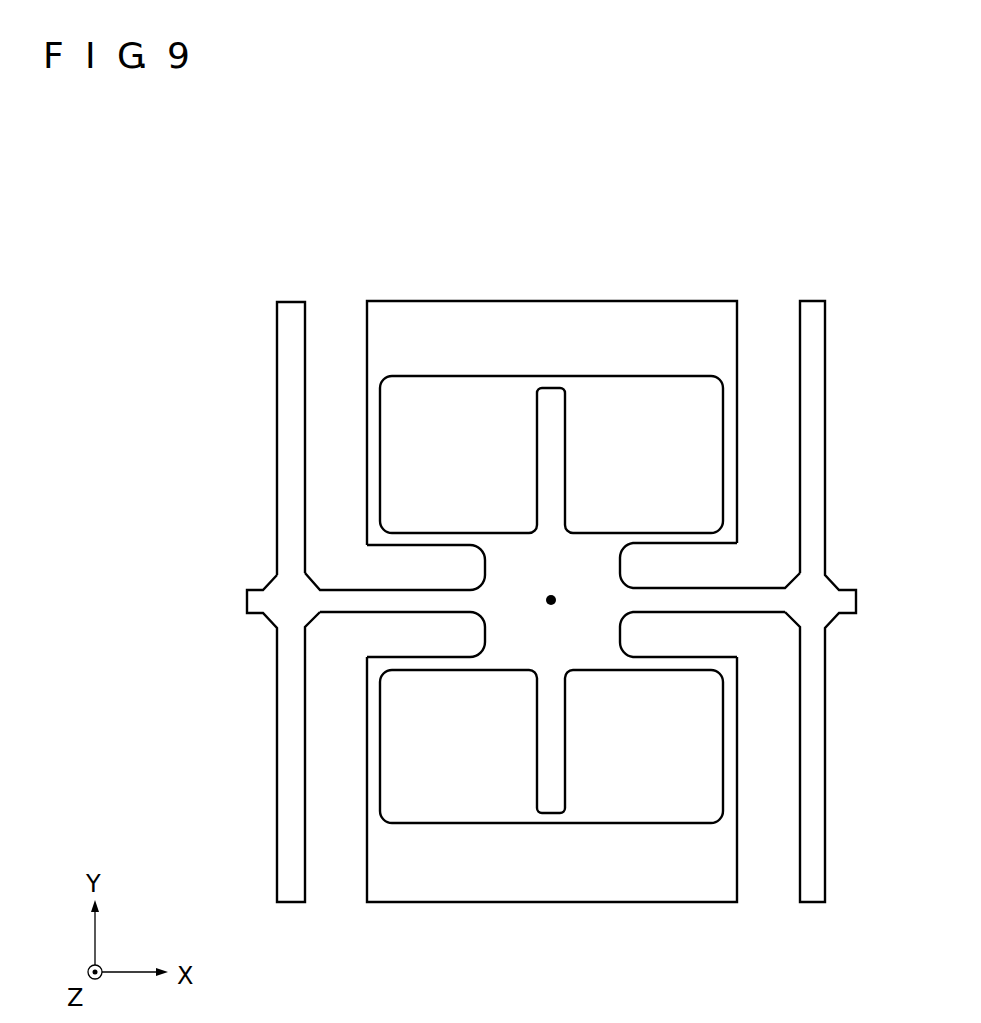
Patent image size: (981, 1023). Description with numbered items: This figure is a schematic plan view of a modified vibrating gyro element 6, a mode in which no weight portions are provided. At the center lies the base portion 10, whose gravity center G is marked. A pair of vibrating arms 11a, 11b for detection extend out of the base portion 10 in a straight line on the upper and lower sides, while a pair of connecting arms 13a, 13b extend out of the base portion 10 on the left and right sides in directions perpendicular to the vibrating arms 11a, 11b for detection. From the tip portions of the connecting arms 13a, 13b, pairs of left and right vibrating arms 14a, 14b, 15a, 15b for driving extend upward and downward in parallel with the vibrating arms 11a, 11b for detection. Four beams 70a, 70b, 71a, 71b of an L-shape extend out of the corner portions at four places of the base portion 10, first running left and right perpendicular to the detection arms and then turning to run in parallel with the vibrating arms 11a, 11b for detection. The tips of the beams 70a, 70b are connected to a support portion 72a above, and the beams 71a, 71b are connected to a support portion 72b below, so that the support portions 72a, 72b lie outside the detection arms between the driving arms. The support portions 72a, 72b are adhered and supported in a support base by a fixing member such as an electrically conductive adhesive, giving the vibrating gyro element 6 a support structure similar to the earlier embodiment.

The vibrating gyro element 6 is at (760, 251).
The base portion 10 is at (627, 612).
The vibrating arm for detection 11a is at (550, 442).
The vibrating arm for detection 11b is at (552, 755).
The connecting arm 13a is at (403, 603).
The connecting arm 13b is at (697, 603).
The vibrating arm for driving 14a is at (291, 443).
The vibrating arm for driving 14b is at (291, 753).
The vibrating arm for driving 15a is at (812, 440).
The vibrating arm for driving 15b is at (812, 750).
The beam 70a is at (378, 441).
The beam 70b is at (731, 438).
The beam 71a is at (378, 759).
The beam 71b is at (731, 761).
The support portion 72a is at (549, 302).
The support portion 72b is at (550, 902).
The gravity center G is at (550, 583).